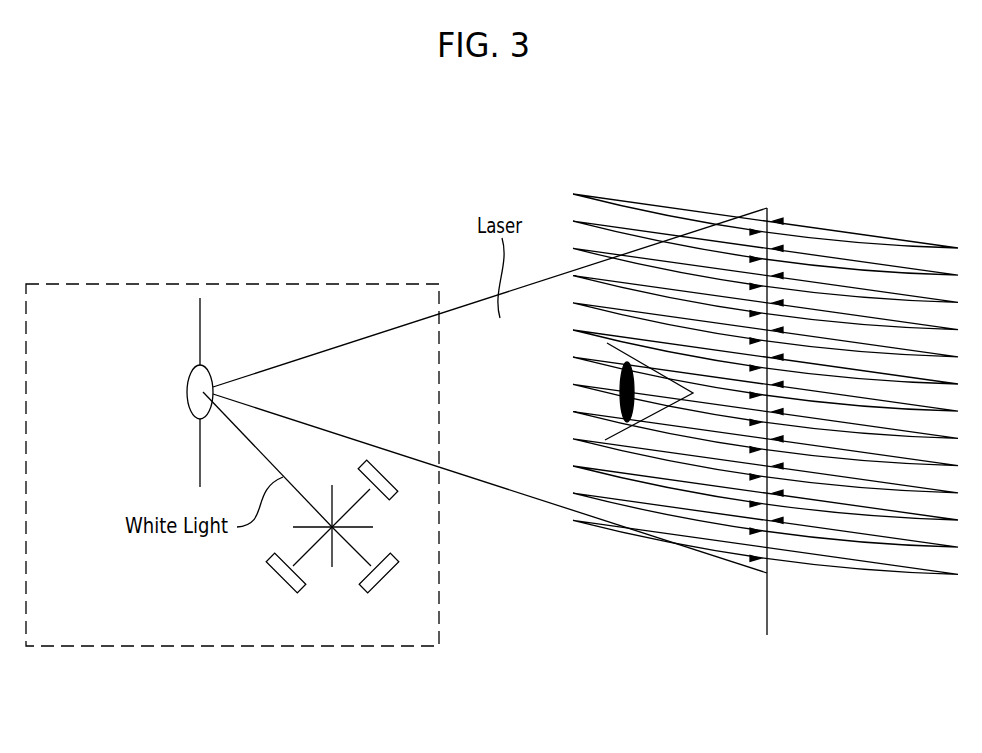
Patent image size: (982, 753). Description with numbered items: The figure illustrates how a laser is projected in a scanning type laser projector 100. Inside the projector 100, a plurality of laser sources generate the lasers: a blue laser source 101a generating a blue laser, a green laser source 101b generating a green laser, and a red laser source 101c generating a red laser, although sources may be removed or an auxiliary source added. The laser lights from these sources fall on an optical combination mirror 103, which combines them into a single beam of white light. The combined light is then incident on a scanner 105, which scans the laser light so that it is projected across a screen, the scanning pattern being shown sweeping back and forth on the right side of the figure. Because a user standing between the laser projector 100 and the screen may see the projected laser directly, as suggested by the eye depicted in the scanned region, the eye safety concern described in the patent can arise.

The laser projector 100 is at (297, 283).
The scanner 105 is at (187, 391).
The optical combination mirror 103 is at (363, 527).
The blue laser source 101a is at (302, 590).
The green laser source 101b is at (362, 590).
The red laser source 101c is at (395, 495).